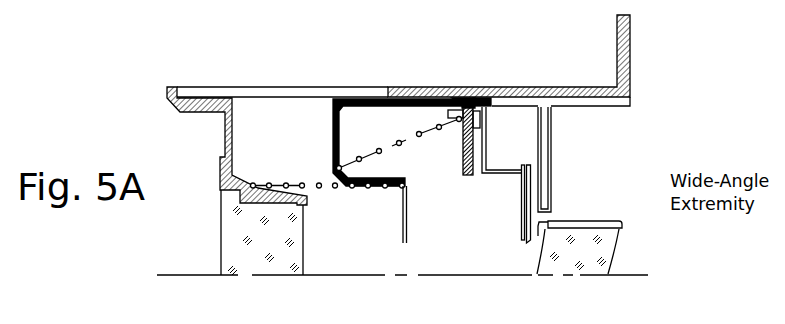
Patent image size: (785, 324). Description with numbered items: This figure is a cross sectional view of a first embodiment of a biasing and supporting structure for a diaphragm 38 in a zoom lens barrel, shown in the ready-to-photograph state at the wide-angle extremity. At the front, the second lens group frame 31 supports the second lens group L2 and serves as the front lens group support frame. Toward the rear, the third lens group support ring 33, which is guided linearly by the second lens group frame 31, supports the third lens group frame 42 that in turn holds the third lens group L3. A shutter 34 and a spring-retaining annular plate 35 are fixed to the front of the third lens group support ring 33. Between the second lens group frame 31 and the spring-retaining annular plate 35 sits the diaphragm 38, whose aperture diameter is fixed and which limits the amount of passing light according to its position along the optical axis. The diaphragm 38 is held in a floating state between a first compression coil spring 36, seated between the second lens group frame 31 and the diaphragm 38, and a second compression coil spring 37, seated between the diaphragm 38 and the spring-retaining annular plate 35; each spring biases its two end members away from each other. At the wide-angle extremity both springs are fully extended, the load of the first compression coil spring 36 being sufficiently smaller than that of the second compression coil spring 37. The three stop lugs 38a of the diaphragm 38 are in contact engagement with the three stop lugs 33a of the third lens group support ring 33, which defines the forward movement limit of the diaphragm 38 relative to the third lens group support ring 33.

The second lens group frame 31 is at (220, 174).
The third lens group support ring 33 is at (546, 136).
The stop lugs 33a is at (470, 97).
The shutter 34 is at (509, 163).
The spring-retaining annular plate 35 is at (467, 176).
The first compression coil spring 36 is at (301, 183).
The second compression coil spring 37 is at (420, 138).
The diaphragm 38 is at (407, 233).
The stop lugs 38a is at (484, 97).
The third lens group frame 42 is at (609, 221).
The second lens group L2 is at (266, 265).
The third lens group L3 is at (565, 257).